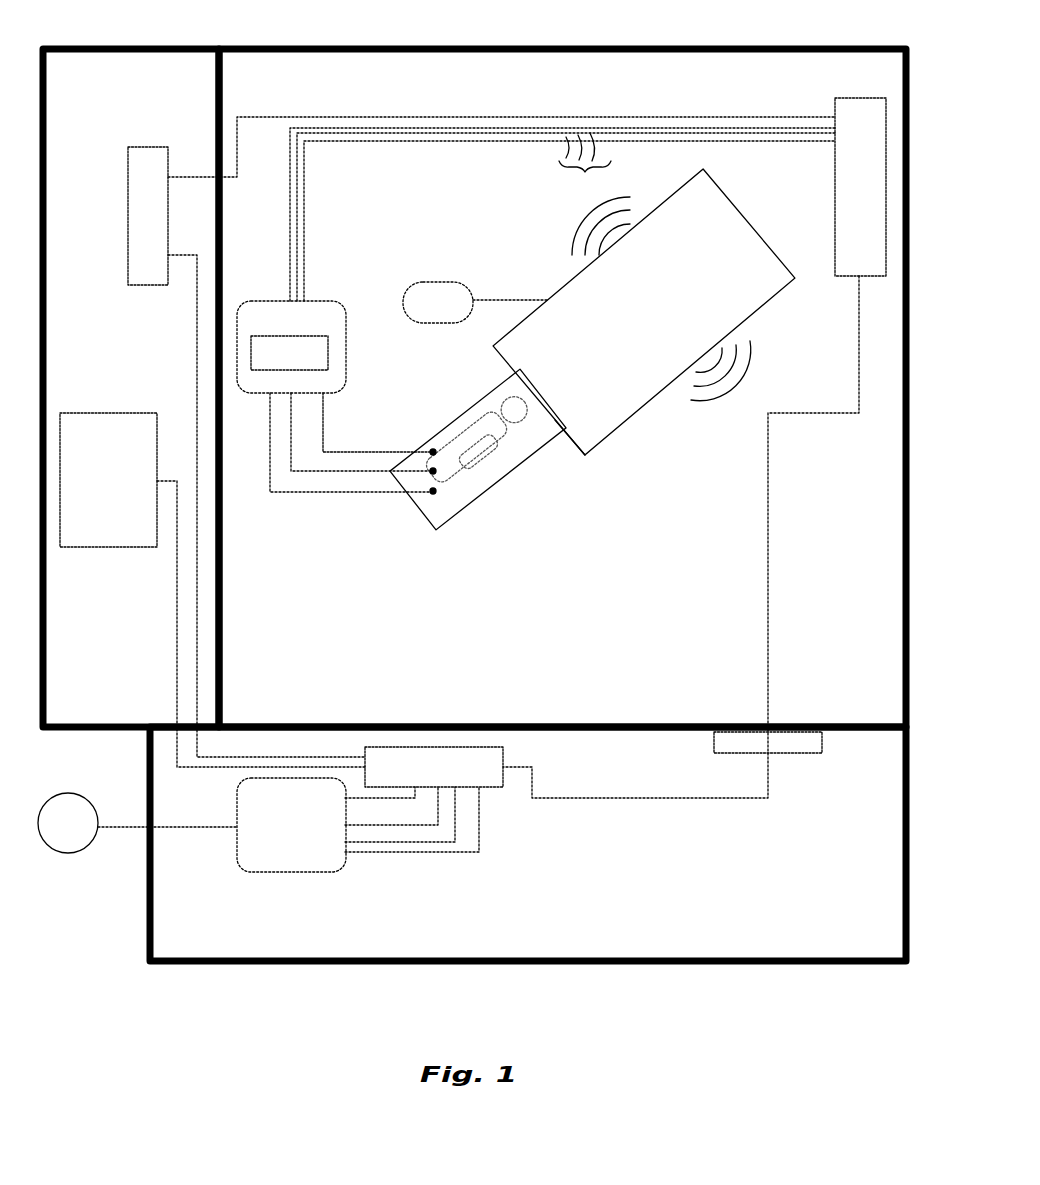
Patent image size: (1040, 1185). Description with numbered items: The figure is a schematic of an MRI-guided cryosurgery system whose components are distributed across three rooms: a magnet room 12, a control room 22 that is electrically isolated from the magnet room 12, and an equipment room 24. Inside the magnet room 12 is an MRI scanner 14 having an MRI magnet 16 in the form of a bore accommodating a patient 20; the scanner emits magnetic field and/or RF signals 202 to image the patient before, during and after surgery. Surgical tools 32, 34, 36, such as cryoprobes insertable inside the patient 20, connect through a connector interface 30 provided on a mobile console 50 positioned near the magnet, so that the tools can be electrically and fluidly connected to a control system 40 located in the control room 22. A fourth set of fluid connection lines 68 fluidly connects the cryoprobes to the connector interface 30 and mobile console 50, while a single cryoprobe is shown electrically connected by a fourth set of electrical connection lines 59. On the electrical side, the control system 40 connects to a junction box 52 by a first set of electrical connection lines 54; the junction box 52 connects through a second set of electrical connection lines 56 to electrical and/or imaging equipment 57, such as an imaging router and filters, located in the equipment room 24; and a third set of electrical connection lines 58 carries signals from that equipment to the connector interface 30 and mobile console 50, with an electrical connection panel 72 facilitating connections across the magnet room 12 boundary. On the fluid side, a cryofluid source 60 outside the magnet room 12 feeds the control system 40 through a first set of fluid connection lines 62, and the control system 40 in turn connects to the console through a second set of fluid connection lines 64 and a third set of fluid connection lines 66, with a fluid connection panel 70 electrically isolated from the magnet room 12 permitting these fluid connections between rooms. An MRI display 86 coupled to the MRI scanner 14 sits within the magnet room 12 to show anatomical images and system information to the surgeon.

The magnet room 12 is at (650, 47).
The equipment room 24 is at (84, 47).
The control room 22 is at (683, 964).
The electrical and/or imaging equipment 57 is at (142, 170).
The third set of electrical connection lines 58 is at (683, 117).
The electrical connection panel 72 is at (875, 217).
The third set of fluid connection lines 66 is at (640, 836).
The RF signals 202 is at (582, 222).
The MRI scanner 14 is at (657, 426).
The MRI magnet 16 is at (568, 448).
The patient 20 is at (487, 452).
The surgical tool 32 is at (433, 450).
The surgical tool 34 is at (436, 472).
The surgical tool 36 is at (435, 494).
The fourth set of electrical connection lines 59 is at (388, 452).
The fourth set of fluid connection lines 68 is at (362, 453).
The mobile console 50 is at (318, 300).
The connector interface 30 is at (317, 357).
The MRI display 86 is at (433, 318).
The second set of electrical connection lines 56 is at (292, 767).
The junction box 52 is at (457, 747).
The first set of electrical connection lines 54 is at (455, 830).
The second set of fluid connection lines 64 is at (483, 895).
The control system 40 is at (335, 872).
The cryofluid source 60 is at (74, 850).
The first set of fluid connection lines 62 is at (187, 830).
The fluid connection panel 70 is at (797, 756).